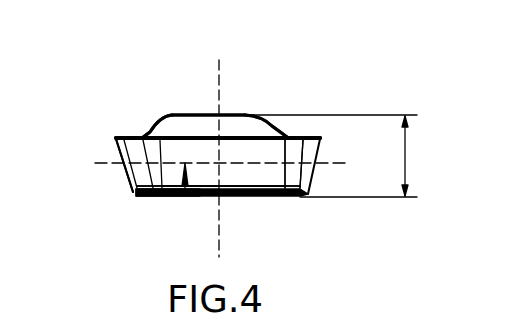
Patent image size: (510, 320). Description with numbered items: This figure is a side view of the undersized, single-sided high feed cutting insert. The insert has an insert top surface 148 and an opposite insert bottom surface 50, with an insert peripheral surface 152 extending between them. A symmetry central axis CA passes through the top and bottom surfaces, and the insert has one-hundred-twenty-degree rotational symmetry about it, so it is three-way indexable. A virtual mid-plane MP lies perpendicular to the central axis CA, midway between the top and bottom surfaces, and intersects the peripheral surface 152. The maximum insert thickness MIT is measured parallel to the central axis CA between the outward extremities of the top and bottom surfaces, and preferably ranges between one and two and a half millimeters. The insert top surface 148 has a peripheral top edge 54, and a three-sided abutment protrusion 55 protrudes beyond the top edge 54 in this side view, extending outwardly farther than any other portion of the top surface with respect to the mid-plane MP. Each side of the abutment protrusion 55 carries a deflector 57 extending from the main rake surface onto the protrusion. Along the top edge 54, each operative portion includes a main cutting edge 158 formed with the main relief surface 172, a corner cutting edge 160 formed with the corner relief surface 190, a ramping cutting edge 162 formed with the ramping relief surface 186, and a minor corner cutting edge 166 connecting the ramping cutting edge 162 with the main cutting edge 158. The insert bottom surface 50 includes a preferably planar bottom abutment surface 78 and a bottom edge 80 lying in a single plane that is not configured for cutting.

The abutment protrusion 55 is at (192, 112).
The insert top surface 148 is at (209, 112).
The symmetry central axis CA is at (221, 70).
The main cutting edge 158 is at (261, 135).
The deflector 57 is at (283, 136).
The corner cutting edge 160 is at (301, 133).
The peripheral top edge 54 is at (332, 124).
The minor corner cutting edge 166 is at (150, 133).
The ramping cutting edge 162 is at (135, 136).
The ramping relief surface 186 is at (124, 152).
The virtual mid-plane MP is at (100, 170).
The insert bottom surface 50 is at (104, 210).
The bottom abutment surface 78 is at (148, 196).
The insert peripheral surface 152 is at (183, 197).
The bottom edge 80 is at (202, 197).
The main relief surface 172 is at (258, 168).
The corner relief surface 190 is at (300, 168).
The maximum insert thickness MIT is at (381, 156).